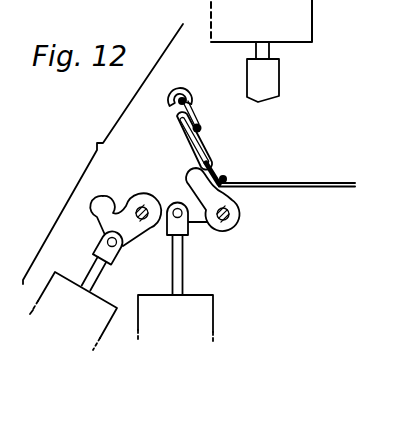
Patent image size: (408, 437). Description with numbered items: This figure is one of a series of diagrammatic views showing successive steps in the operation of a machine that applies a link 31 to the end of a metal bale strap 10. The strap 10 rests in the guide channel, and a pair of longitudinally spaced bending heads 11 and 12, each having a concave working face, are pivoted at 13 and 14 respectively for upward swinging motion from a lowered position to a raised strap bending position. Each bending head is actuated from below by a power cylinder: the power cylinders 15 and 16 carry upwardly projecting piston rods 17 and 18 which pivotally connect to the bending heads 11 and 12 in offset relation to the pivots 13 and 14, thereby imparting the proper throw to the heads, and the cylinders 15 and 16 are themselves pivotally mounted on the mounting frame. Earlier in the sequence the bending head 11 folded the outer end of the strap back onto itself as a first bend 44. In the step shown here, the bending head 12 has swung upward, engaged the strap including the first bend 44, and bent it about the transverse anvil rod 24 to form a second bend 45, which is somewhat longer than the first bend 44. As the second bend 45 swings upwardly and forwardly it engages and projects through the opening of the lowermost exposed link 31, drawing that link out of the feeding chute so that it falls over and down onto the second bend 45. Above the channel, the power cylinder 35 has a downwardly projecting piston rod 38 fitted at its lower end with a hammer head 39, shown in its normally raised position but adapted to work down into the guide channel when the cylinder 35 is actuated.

The strap 10 is at (322, 183).
The bending head 11 is at (101, 194).
The bending head 12 is at (197, 175).
The pivot 13 is at (142, 221).
The pivot 14 is at (241, 216).
The power cylinder 15 is at (92, 327).
The power cylinder 16 is at (205, 310).
The piston rod 17 is at (93, 275).
The piston rod 18 is at (176, 256).
The anvil rod 24 is at (227, 175).
The link 31 is at (168, 103).
The power cylinder 35 is at (304, 17).
The piston rod 38 is at (262, 52).
The hammer head 39 is at (269, 86).
The first bend 44 is at (199, 150).
The second bend 45 is at (175, 125).